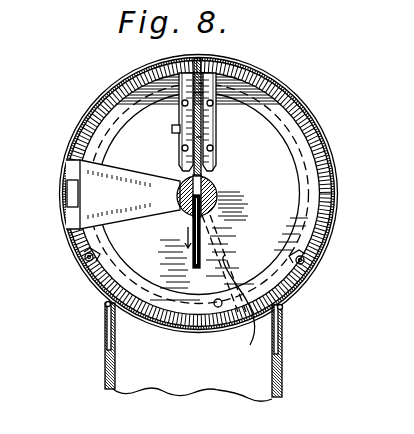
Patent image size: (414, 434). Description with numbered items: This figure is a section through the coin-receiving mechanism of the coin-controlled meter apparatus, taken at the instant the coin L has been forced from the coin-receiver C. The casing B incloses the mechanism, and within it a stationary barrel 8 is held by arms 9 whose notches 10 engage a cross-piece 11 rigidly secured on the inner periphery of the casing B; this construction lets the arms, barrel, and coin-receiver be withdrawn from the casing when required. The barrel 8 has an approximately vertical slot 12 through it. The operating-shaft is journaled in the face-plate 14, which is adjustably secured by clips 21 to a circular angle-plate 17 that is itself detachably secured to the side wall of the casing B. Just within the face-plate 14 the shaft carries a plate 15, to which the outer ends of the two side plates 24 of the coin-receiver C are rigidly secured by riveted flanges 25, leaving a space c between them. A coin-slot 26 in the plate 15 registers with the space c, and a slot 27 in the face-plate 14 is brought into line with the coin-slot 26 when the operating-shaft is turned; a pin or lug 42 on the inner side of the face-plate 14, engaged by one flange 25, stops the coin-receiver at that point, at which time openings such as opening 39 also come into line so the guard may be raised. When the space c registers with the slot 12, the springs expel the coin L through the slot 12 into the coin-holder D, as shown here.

The barrel 8 is at (218, 200).
The arms 9 is at (130, 194).
The notches 10 is at (69, 210).
The cross-piece 11 is at (67, 193).
The slot 12 is at (212, 184).
The face-plate 14 is at (285, 141).
The plate 15 is at (229, 246).
The circular angle-plate 17 is at (339, 209).
The clips 21 is at (86, 262).
The side plates 24 is at (173, 130).
The flanges 25 is at (180, 159).
The coin-slot 26 is at (201, 72).
The slot in the face-plate 27 is at (232, 289).
The opening 39 is at (119, 182).
The pin or lug 42 is at (217, 307).
The casing B is at (77, 130).
The coin-receiver C is at (200, 125).
The space c is at (202, 138).
The coin L is at (184, 225).
The coin-holder D is at (194, 352).